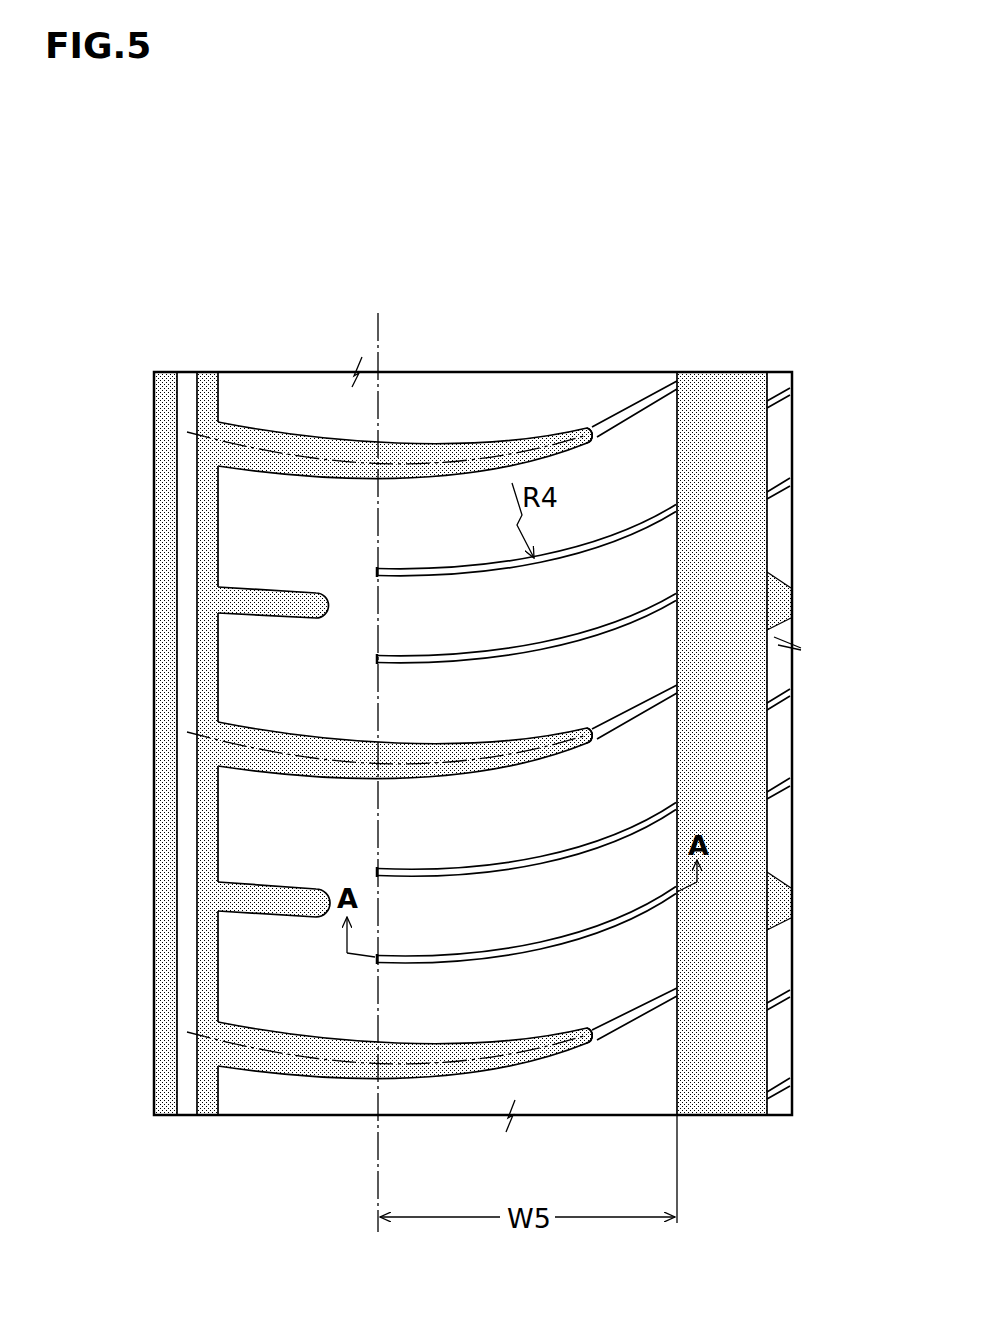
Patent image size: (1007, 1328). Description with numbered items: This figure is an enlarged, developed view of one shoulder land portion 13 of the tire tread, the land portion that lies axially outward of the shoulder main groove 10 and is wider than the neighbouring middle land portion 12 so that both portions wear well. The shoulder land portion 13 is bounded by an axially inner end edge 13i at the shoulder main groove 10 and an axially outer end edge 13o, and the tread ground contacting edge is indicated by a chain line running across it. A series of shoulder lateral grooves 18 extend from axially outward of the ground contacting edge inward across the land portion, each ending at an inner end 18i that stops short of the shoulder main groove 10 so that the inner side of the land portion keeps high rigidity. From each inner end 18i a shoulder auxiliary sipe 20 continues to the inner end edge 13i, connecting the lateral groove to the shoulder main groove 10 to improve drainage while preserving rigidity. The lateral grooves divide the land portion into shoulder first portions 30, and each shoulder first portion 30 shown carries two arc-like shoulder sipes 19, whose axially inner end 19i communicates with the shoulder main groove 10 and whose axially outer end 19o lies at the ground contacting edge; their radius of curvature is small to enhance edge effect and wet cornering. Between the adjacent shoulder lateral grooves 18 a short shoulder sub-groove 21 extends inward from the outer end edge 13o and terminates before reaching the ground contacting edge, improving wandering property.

The shoulder main groove 10 is at (727, 405).
The middle land portion 12 is at (779, 369).
The shoulder land portion 13 is at (495, 411).
The axial inner end edge of shoulder land portion 13i is at (681, 403).
The axially outer end edge of shoulder land portion 13o is at (213, 390).
The shoulder lateral groove 18 is at (440, 455).
The inner end of shoulder lateral groove 18i is at (598, 438).
The shoulder sipe 19 is at (623, 530).
The axially inner end of shoulder sipe 19i is at (664, 516).
The axially outer end of shoulder sipe 19o is at (373, 570).
The shoulder auxiliary sipe 20 is at (648, 405).
The shoulder sub-groove 21 is at (293, 601).
The shoulder first portion 30 is at (250, 666).